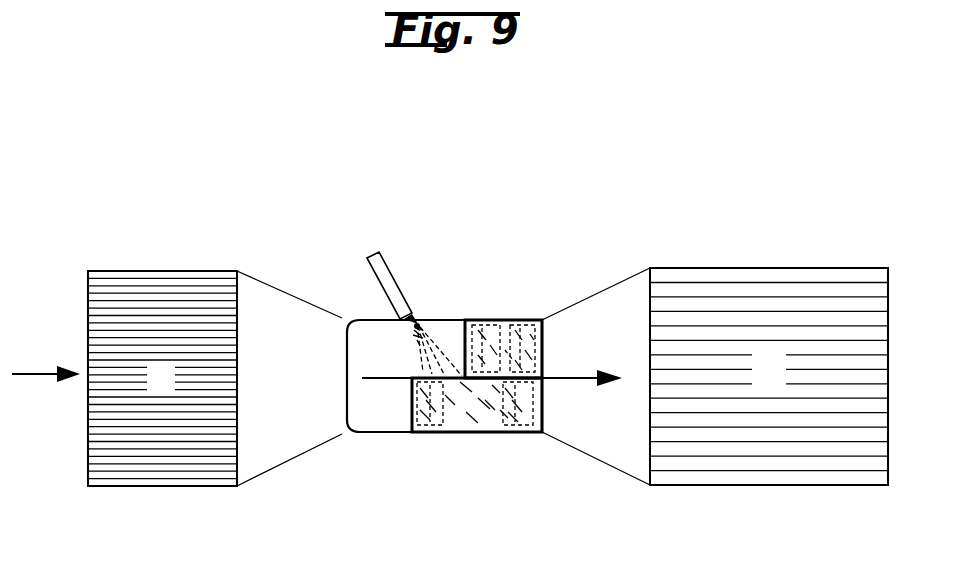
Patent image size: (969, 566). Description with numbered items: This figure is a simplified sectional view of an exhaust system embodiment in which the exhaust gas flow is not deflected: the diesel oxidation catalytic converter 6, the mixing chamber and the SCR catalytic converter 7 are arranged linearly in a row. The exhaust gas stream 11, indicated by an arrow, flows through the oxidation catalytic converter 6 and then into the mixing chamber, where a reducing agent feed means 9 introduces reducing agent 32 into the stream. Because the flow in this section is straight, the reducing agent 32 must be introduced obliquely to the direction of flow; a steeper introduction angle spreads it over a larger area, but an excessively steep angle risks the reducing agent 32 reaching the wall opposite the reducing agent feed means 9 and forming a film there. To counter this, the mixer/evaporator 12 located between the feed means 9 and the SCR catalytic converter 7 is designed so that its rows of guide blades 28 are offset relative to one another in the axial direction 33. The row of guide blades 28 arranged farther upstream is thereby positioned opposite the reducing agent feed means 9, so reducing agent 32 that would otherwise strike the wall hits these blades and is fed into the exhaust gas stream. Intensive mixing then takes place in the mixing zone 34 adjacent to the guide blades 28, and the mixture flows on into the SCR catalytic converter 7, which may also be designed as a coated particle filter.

The diesel oxidation catalytic converter 6 is at (165, 392).
The SCR catalytic converter 7 is at (775, 390).
The reducing agent feed means 9 is at (401, 278).
The exhaust gas stream 11 is at (46, 360).
The mixer/evaporator 12 is at (503, 318).
The row of guide blades 28 is at (528, 318).
The reducing agent 32 is at (418, 347).
The axial direction 33 is at (492, 363).
The mixing zone 34 is at (484, 414).